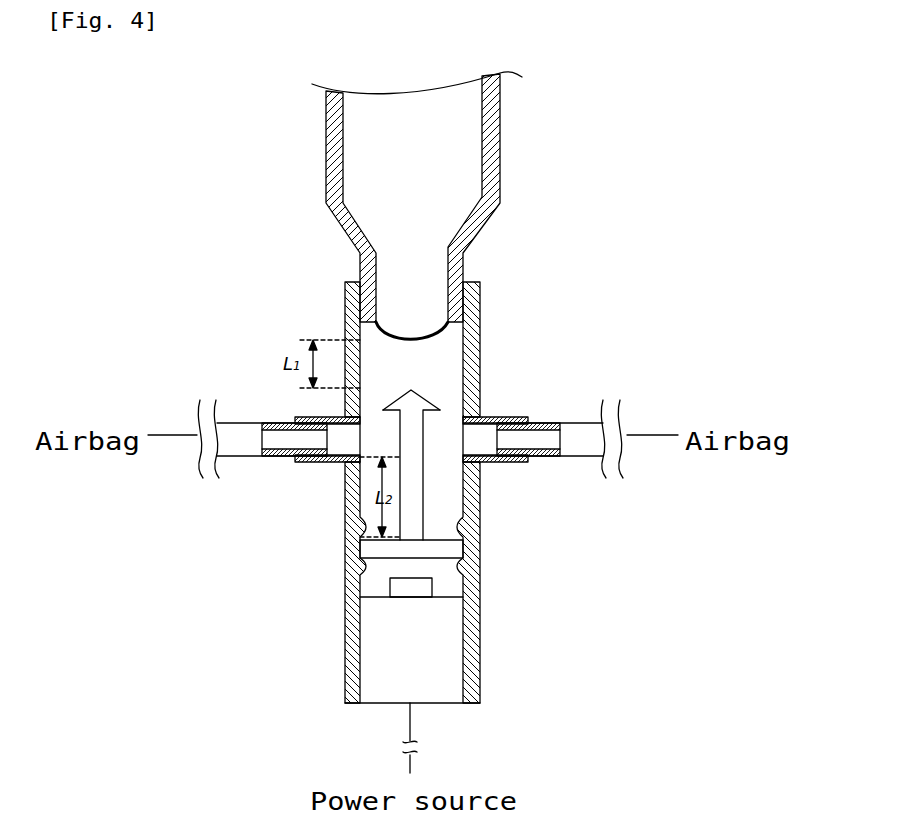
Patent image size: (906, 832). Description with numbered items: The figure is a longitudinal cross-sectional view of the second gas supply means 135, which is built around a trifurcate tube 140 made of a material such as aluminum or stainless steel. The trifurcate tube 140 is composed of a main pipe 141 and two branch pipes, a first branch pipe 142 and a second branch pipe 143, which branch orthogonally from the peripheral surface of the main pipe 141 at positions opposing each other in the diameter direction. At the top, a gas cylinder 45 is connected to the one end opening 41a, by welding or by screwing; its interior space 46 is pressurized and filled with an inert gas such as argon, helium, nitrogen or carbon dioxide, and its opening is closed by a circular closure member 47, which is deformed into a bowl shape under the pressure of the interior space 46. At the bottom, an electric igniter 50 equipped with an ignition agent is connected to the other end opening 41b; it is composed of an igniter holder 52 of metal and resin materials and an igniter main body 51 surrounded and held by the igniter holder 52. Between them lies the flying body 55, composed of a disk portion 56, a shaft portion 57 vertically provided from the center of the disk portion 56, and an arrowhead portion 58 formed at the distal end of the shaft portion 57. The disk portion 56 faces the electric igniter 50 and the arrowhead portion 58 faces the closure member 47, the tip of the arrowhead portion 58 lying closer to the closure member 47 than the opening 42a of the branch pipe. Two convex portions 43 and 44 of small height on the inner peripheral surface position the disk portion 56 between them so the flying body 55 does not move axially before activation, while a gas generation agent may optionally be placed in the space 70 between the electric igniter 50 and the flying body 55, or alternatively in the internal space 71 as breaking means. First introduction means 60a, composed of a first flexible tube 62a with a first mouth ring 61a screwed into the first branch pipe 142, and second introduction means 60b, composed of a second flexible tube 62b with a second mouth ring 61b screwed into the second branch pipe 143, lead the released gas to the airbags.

The second gas supply means 135 is at (288, 276).
The gas cylinder 45 is at (504, 145).
The interior space 46 is at (424, 158).
The closure member 47 is at (410, 338).
The one end opening 41a is at (466, 280).
The other end opening 41b is at (470, 704).
The trifurcate tube 140 is at (482, 332).
The internal space 71 is at (378, 357).
The arrowhead portion 58 is at (414, 390).
The shaft portion 57 is at (425, 458).
The second branch pipe 143 is at (297, 415).
The first branch pipe 142 is at (505, 417).
The flying body 55 is at (397, 441).
The opening of the branch pipe 42a is at (463, 447).
The convex portion 44 is at (440, 528).
The main pipe 141 is at (480, 507).
The disk portion 56 is at (380, 548).
The convex portion 43 is at (480, 597).
The space 70 is at (375, 590).
The igniter main body 51 is at (415, 590).
The electric igniter 50 is at (373, 704).
The igniter holder 52 is at (440, 687).
The second flexible tube 62b is at (242, 458).
The second mouth ring 61b is at (288, 458).
The second introduction means 60b is at (303, 518).
The first flexible tube 62a is at (595, 458).
The first mouth ring 61a is at (540, 458).
The first introduction means 60a is at (603, 518).